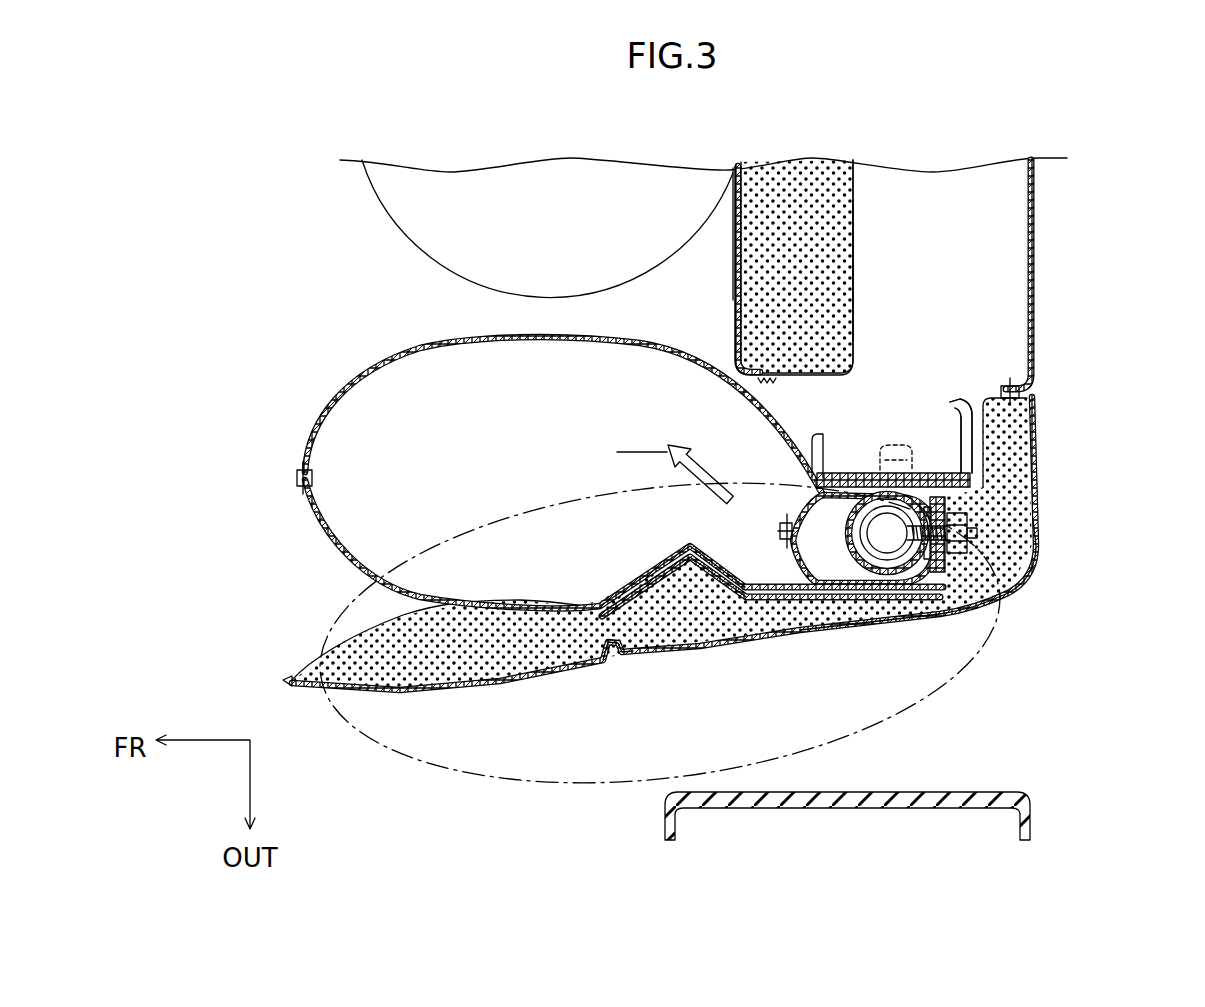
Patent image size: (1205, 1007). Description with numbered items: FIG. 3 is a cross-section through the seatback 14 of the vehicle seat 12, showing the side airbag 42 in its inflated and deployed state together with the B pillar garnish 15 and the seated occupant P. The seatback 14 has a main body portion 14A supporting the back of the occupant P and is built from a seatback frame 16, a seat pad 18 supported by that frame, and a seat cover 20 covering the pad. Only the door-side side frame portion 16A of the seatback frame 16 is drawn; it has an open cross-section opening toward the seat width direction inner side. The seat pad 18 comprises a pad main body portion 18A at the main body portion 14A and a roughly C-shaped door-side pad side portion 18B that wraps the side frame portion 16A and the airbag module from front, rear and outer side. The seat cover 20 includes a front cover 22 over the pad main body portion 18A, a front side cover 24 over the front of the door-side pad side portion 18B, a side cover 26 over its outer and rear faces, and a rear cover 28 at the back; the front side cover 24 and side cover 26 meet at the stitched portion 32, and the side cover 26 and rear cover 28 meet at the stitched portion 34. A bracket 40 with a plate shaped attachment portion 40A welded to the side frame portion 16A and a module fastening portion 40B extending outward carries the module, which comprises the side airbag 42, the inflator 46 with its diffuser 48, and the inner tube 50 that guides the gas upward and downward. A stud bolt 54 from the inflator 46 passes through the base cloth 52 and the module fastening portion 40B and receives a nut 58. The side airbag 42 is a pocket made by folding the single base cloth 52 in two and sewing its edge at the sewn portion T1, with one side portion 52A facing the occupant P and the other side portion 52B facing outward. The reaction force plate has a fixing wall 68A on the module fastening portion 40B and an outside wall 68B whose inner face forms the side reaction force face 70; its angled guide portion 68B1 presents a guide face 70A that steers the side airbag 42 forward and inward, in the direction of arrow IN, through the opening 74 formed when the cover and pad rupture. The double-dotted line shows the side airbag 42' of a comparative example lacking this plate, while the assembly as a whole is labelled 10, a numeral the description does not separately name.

The vehicle side structure 10 is at (597, 565).
The vehicle seat 12 is at (1015, 316).
The seatback 14 is at (1043, 316).
The main body portion 14A is at (719, 254).
The seatback frame 16 is at (965, 400).
The side frame portion 16A is at (950, 399).
The seat pad 18 is at (790, 271).
The pad main body portion 18A is at (853, 278).
The door-side pad side portion 18B is at (701, 580).
The seat cover 20 is at (701, 580).
The front cover 22 is at (733, 287).
The front side cover 24 is at (430, 697).
The side cover 26 is at (940, 612).
The rear cover 28 is at (1035, 278).
The stitched portion 32 is at (612, 685).
The stitched portion 34 is at (1049, 391).
The bracket 40 is at (892, 438).
The attachment portion 40A is at (857, 480).
The module fastening portion 40B is at (1003, 587).
The side airbag 42 is at (569, 455).
The side airbag of Comparative Example 42' is at (660, 645).
The inflator 46 is at (890, 572).
The diffuser 48 is at (870, 572).
The inner tube 50 is at (807, 493).
The base cloth 52 is at (513, 455).
The one side portion 52A is at (368, 380).
The another side portion 52B is at (432, 587).
The stud bolt 54 is at (987, 537).
The nut 58 is at (980, 523).
The fixing wall 68A is at (960, 500).
The outside wall 68B is at (771, 625).
The guide portion 68B1 is at (690, 560).
The side reaction force face 70 is at (771, 643).
The guide face 70A is at (733, 600).
The opening 74 is at (705, 418).
The B pillar garnish 15 is at (993, 790).
The occupant P is at (370, 222).
The sewn portion T1 is at (303, 472).